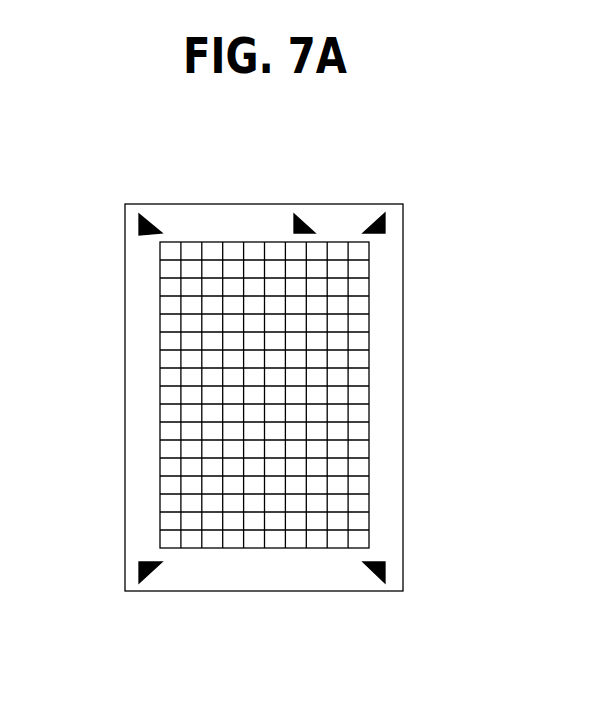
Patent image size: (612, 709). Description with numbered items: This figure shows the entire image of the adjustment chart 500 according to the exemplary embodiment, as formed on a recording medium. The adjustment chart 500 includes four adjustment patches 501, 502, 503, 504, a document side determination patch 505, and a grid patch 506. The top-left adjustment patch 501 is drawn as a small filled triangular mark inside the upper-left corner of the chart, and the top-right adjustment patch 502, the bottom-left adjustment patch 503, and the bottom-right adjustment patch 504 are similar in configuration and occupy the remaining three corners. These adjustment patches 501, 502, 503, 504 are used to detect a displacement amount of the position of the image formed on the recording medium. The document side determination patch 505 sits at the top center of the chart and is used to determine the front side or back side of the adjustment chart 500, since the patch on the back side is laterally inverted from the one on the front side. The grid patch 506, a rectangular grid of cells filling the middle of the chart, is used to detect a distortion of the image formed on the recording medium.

The adjustment chart 500 is at (170, 203).
The adjustment patch 501 is at (142, 234).
The adjustment patch 502 is at (385, 218).
The adjustment patch 503 is at (140, 572).
The adjustment patch 504 is at (385, 567).
The document side determination patch 505 is at (300, 218).
The grid patch 506 is at (369, 373).